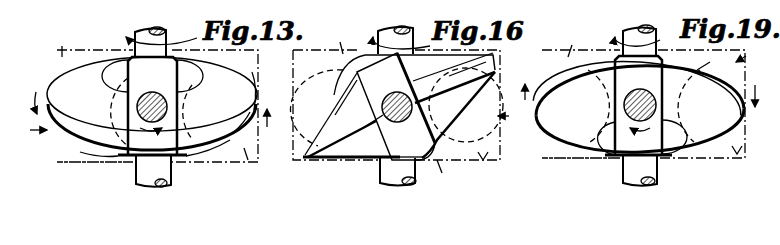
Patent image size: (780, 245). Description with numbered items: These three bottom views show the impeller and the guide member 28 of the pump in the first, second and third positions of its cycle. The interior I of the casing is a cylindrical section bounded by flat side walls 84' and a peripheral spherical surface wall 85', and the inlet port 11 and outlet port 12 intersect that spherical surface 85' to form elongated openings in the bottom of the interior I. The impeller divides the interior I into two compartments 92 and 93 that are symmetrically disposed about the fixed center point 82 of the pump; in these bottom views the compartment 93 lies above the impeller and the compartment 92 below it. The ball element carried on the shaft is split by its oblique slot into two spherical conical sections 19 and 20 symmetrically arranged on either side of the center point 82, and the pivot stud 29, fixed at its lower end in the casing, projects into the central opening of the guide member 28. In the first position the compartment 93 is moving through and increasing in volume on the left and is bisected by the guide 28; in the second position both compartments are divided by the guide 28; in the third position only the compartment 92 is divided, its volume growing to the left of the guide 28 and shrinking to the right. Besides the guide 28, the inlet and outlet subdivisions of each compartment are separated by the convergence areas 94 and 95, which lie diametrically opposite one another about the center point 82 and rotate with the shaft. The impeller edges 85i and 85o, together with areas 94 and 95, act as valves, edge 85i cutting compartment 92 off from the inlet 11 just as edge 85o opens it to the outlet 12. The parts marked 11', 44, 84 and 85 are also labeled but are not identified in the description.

In FIG. 13, the inlet port 11 is at (140, 106).
In FIG. 16, the inlet port 11 is at (384, 80).
In FIG. 19, the inlet port 11 is at (648, 96).
In FIG. 13, the housing wall 11' is at (61, 15).
In FIG. 13, the outlet port 12 is at (212, 6).
In FIG. 16, the outlet port 12 is at (507, 71).
In FIG. 19, the outlet port 12 is at (738, 83).
In FIG. 16, the spherical conical section 19 is at (447, 176).
In FIG. 19, the spherical conical section 19 is at (690, 146).
In FIG. 13, the spherical conical section 20 is at (186, 45).
In FIG. 16, the spherical conical section 20 is at (362, 47).
In FIG. 19, the spherical conical section 20 is at (637, 41).
In FIG. 13, the guide member 28 is at (148, 145).
In FIG. 16, the guide member 28 is at (402, 138).
In FIG. 19, the guide member 28 is at (640, 143).
In FIG. 13, the pivot stud 29 is at (150, 96).
In FIG. 16, the pivot stud 29 is at (394, 97).
In FIG. 19, the pivot stud 29 is at (639, 93).
In FIG. 13, the shaft pin 44 is at (157, 184).
In FIG. 13, the fixed center point 82 is at (140, 115).
In FIG. 16, the fixed center point 82 is at (383, 106).
In FIG. 19, the fixed center point 82 is at (658, 112).
In FIG. 13, the disc 84 is at (152, 77).
In FIG. 13, the flat side wall 84' is at (154, 170).
In FIG. 16, the flat side wall 84' is at (400, 136).
In FIG. 19, the flat side wall 84' is at (638, 129).
In FIG. 13, the cam surface 85 is at (269, 84).
In FIG. 13, the peripheral spherical surface wall 85' is at (152, 109).
In FIG. 16, the peripheral spherical surface wall 85' is at (415, 161).
In FIG. 19, the peripheral spherical surface wall 85' is at (637, 127).
In FIG. 13, the impeller edge 85i is at (77, 150).
In FIG. 16, the impeller edge 85i is at (314, 158).
In FIG. 19, the impeller edge 85i is at (588, 72).
In FIG. 13, the impeller edge 85o is at (233, 136).
In FIG. 16, the impeller edge 85o is at (449, 76).
In FIG. 19, the impeller edge 85o is at (697, 71).
In FIG. 13, the compartment 92 is at (244, 148).
In FIG. 16, the compartment 92 is at (483, 160).
In FIG. 19, the compartment 92 is at (737, 154).
In FIG. 13, the compartment 93 is at (50, 40).
In FIG. 16, the compartment 93 is at (327, 39).
In FIG. 19, the compartment 93 is at (574, 40).
In FIG. 16, the dotted line (convergence area) 94 is at (328, 163).
In FIG. 13, the line or area 95 is at (157, 31).
In FIG. 16, the line or area 95 is at (491, 55).
In FIG. 19, the line or area 95 is at (660, 30).
In FIG. 13, the interior of the casing I is at (136, 116).
In FIG. 16, the interior of the casing I is at (511, 107).
In FIG. 19, the interior of the casing I is at (747, 72).